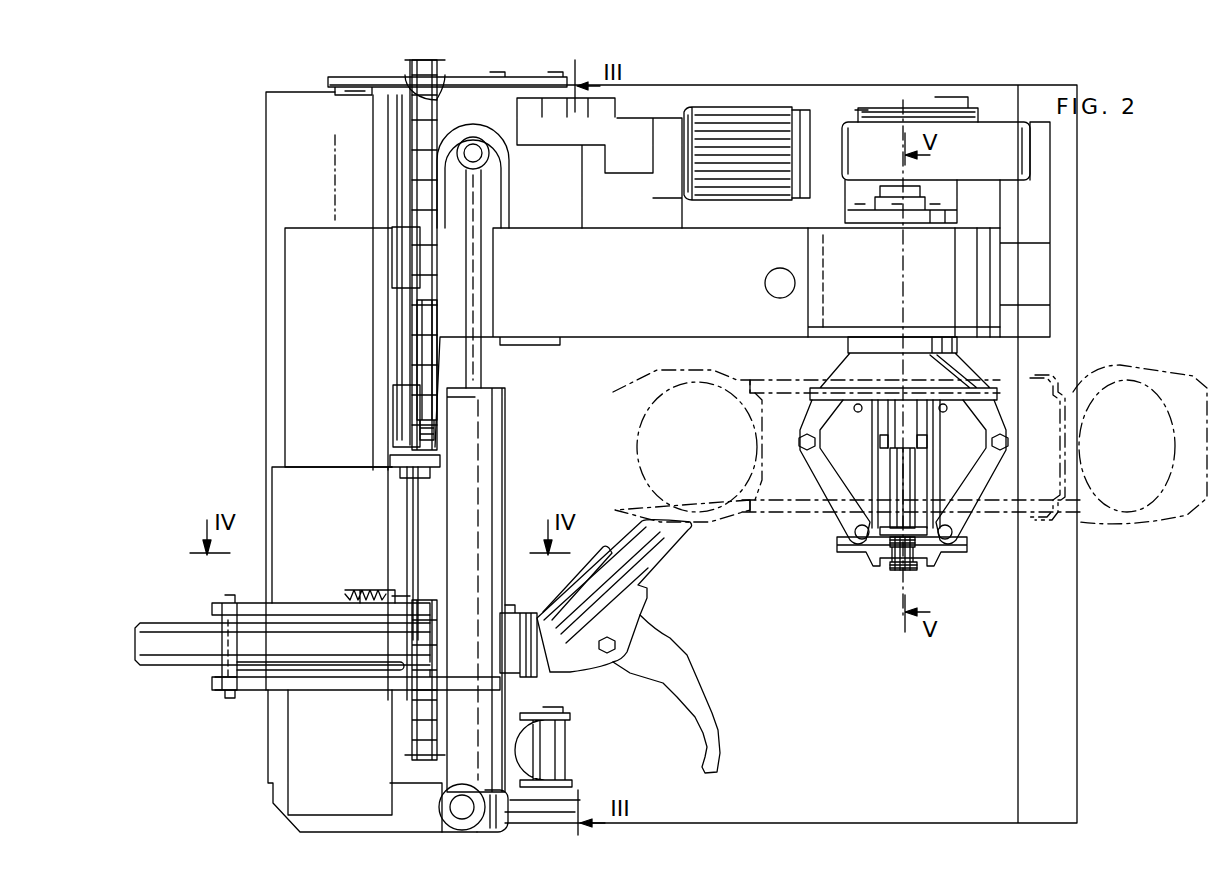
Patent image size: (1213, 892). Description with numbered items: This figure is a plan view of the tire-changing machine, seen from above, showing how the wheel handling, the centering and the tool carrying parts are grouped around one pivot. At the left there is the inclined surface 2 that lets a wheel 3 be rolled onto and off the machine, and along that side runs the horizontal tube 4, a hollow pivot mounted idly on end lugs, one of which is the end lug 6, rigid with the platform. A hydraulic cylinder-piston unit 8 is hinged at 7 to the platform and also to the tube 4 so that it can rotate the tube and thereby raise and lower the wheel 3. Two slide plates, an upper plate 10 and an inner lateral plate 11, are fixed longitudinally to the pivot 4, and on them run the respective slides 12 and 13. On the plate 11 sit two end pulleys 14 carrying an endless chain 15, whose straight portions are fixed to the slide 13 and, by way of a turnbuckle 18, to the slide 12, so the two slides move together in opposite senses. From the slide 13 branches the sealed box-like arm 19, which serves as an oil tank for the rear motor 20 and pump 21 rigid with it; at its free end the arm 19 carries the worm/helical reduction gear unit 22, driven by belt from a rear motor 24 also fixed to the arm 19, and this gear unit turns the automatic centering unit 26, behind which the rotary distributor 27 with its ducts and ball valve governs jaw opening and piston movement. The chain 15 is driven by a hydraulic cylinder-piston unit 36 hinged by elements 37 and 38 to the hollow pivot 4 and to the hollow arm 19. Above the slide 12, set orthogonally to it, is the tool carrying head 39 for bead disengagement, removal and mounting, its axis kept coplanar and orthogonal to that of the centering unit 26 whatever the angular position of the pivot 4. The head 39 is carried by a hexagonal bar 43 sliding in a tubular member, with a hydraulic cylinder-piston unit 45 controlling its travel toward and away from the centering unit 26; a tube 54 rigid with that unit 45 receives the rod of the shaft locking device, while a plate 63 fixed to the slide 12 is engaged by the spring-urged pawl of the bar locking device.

The inclined surface 2 is at (1008, 750).
The wheel 3 is at (1068, 530).
The horizontal tube 4 is at (318, 207).
The end lug 6 is at (385, 92).
The hinge 7 is at (575, 806).
The hydraulic cylinder-piston unit 8 is at (520, 740).
The upper slide plate 10 is at (315, 441).
The inner lateral slide plate 11 is at (405, 155).
The slide 12 is at (331, 573).
The slide 13 is at (398, 266).
The end pulley 14 is at (440, 93).
The endless chain 15 is at (428, 762).
The turnbuckle 18 is at (425, 348).
The box-like arm 19 is at (545, 298).
The rear motor 20 is at (752, 188).
The pump 21 is at (646, 155).
The reduction gear unit 22 is at (890, 288).
The rear motor 24 is at (880, 103).
The automatic centering unit 26 is at (960, 565).
The rotary distributor 27 is at (908, 195).
The hydraulic cylinder-piston unit 36 is at (495, 452).
The hinge element 37 is at (455, 780).
The hinge element 38 is at (485, 208).
The tool carrying head 39 is at (645, 616).
The hexagonal bar 43 is at (176, 655).
The hydraulic cylinder-piston unit 45 is at (270, 668).
The tube 54 is at (305, 668).
The plate 63 is at (398, 530).